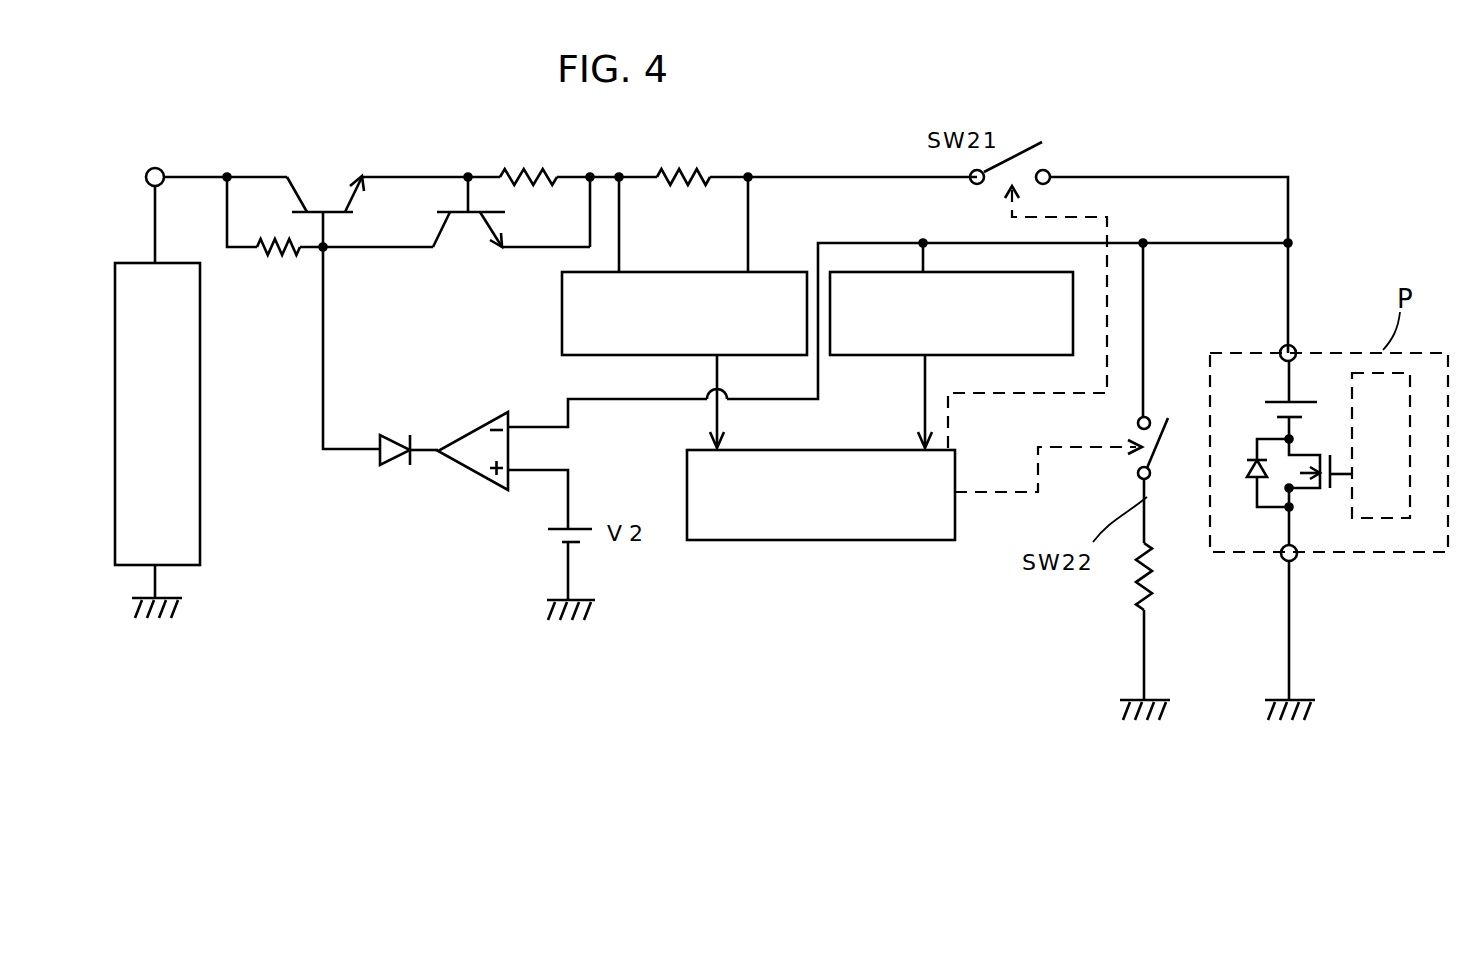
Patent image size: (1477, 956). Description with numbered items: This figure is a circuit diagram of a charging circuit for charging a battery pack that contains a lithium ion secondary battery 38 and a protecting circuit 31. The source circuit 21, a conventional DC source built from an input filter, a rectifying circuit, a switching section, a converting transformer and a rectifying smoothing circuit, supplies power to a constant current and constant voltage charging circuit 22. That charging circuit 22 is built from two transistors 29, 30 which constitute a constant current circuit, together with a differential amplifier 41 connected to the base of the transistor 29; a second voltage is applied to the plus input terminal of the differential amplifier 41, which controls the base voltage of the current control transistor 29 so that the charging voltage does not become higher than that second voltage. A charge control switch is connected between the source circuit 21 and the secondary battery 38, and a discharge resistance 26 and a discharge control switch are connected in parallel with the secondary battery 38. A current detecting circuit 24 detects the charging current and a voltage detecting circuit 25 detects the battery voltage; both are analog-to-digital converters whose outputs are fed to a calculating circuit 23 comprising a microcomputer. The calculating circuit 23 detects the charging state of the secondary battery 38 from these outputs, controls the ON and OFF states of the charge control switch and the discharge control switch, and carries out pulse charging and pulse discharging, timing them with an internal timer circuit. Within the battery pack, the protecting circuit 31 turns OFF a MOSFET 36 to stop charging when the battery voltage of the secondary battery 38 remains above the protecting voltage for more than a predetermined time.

The source circuit 21 is at (200, 405).
The constant current and constant voltage charging circuit 22 is at (413, 487).
The calculating circuit 23 is at (710, 542).
The current detecting circuit 24 is at (680, 273).
The voltage detecting circuit 25 is at (880, 277).
The discharge resistance 26 is at (1160, 583).
The transistor 29 is at (297, 200).
The transistor 30 is at (460, 218).
The protecting circuit 31 is at (1388, 518).
The MOSFET 36 is at (1307, 490).
The secondary battery 38 is at (1305, 397).
The differential amplifier 41 is at (468, 432).